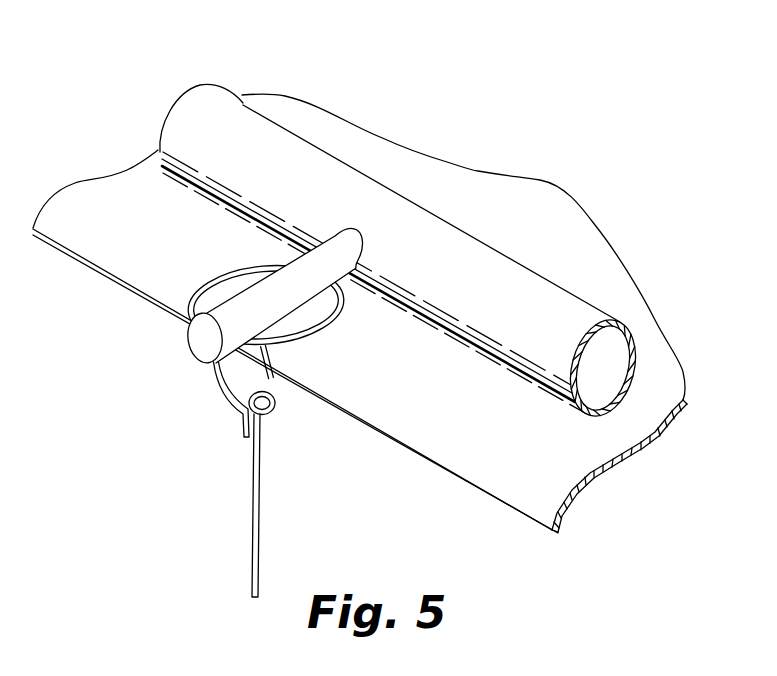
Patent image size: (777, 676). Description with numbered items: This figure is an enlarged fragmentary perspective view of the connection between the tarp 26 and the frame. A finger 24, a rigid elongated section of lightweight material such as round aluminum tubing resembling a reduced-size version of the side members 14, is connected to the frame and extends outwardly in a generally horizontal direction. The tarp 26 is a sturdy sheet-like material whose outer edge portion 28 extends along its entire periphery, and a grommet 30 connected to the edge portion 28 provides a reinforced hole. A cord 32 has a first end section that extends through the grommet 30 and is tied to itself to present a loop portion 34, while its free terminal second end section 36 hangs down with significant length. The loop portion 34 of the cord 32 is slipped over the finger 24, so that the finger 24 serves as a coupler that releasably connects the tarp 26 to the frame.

The side member 14 is at (218, 94).
The finger 24 is at (193, 340).
The tarp 26 is at (481, 170).
The outer edge portion 28 is at (413, 420).
The grommet 30 is at (228, 272).
The cord 32 is at (218, 471).
The loop portion 34 is at (226, 392).
The terminal second end section 36 is at (252, 545).